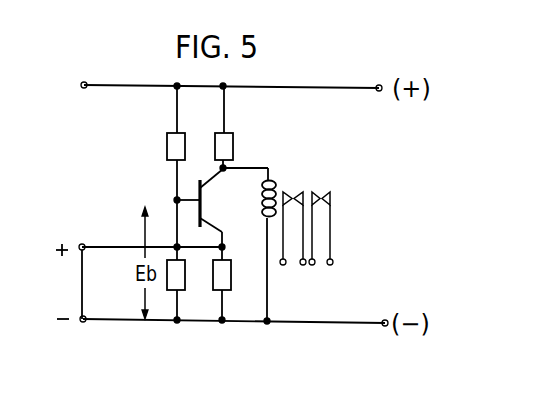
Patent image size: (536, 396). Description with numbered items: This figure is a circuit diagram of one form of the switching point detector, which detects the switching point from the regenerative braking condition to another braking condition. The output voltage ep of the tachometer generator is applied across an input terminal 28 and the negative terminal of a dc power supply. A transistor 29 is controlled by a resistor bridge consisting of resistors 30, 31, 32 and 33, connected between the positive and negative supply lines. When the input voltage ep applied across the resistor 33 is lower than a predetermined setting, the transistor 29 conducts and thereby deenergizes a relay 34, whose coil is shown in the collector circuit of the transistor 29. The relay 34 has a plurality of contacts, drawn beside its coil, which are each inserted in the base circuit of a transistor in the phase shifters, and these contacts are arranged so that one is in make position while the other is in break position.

The input terminal 28 is at (139, 265).
The transistor 29 is at (207, 203).
The resistor 30 is at (167, 148).
The resistor 31 is at (185, 263).
The resistor 32 is at (233, 141).
The resistor 33 is at (231, 264).
The relay 34 is at (292, 192).